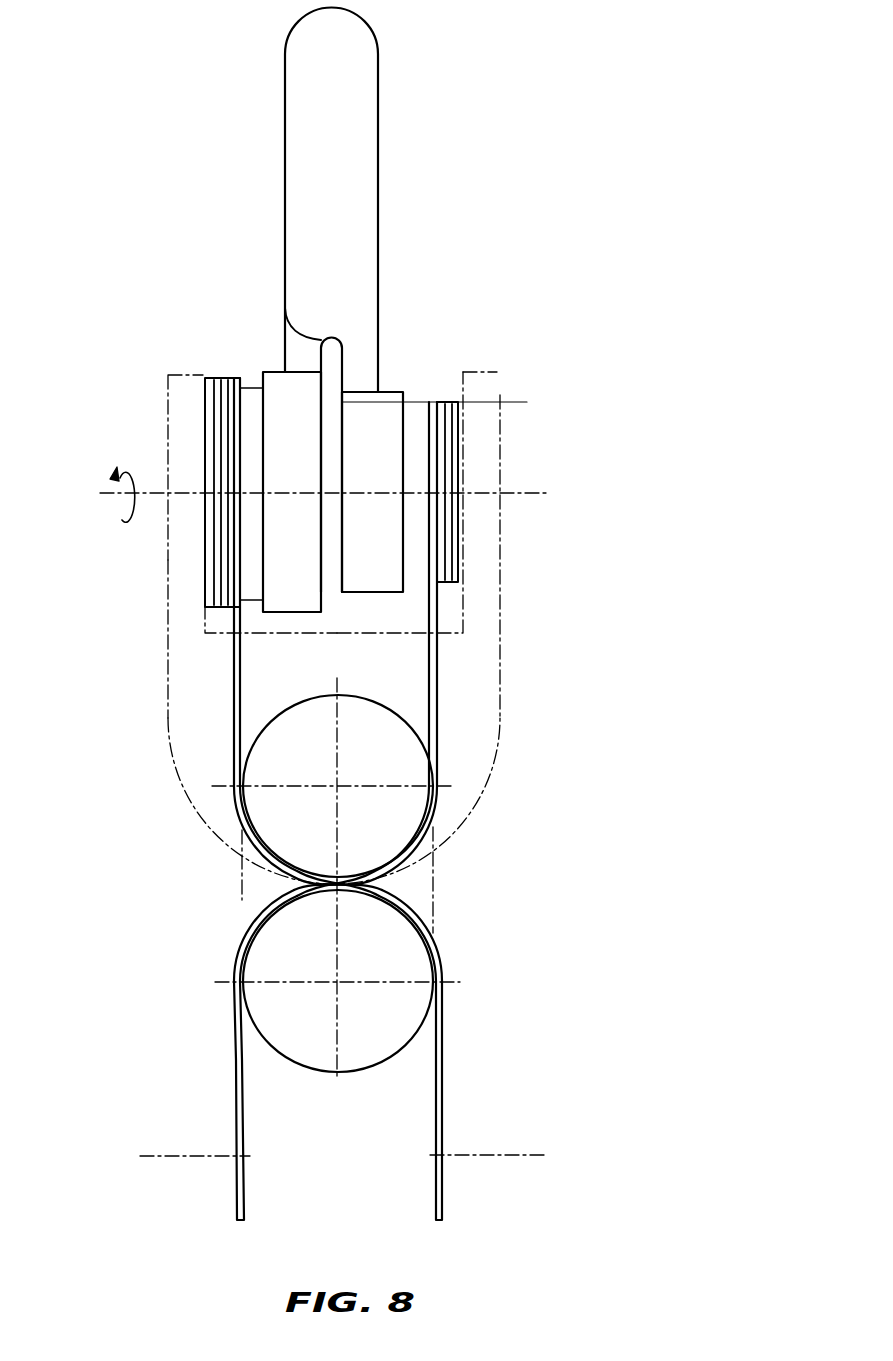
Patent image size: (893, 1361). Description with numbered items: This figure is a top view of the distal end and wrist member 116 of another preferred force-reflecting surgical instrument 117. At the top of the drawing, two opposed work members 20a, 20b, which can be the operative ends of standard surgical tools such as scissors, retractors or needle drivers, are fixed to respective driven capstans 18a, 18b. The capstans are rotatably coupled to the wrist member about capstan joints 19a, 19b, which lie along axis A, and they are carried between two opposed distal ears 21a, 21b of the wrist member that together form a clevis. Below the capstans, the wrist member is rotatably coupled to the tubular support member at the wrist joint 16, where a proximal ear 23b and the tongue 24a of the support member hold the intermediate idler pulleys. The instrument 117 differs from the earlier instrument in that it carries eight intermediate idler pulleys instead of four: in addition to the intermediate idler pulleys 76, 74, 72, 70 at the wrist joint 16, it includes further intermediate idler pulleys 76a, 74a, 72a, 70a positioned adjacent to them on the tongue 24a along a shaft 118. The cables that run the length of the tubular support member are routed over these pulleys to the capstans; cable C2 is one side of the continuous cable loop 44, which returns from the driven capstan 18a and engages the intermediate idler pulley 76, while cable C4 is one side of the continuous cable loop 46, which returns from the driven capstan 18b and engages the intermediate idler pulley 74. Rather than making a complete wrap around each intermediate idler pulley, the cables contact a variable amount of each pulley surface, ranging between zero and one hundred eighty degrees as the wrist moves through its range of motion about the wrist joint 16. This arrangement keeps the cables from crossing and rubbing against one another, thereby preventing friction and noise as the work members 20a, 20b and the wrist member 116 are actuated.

The work member 20b is at (365, 73).
The work member 20a is at (287, 333).
The driven capstan 18a is at (253, 388).
The driven capstan 18b is at (413, 407).
The distal ear 21a is at (170, 405).
The distal ear 21b is at (490, 388).
The capstan joint 19a is at (170, 493).
The capstan joint 19b is at (490, 493).
The axis A- A is at (308, 494).
The wrist member 116 is at (170, 570).
The instrument 117 is at (670, 361).
The proximal ear 23b is at (212, 830).
The cable C2 is at (235, 690).
The cable C4 is at (440, 668).
The wrist joint 16 is at (337, 790).
The shaft 118 is at (340, 982).
The tongue 24a is at (440, 912).
The intermediate idler pulley 70 is at (430, 800).
The intermediate idler pulley 72 is at (407, 778).
The intermediate idler pulley 74 is at (405, 748).
The intermediate idler pulley 76 is at (425, 712).
The intermediate idler pulley 70a is at (265, 1005).
The intermediate idler pulley 72a is at (262, 975).
The intermediate idler pulley 74a is at (285, 948).
The intermediate idler pulley 76a is at (300, 915).
The cable loop 44 is at (442, 1102).
The cable loop 46 is at (237, 1103).